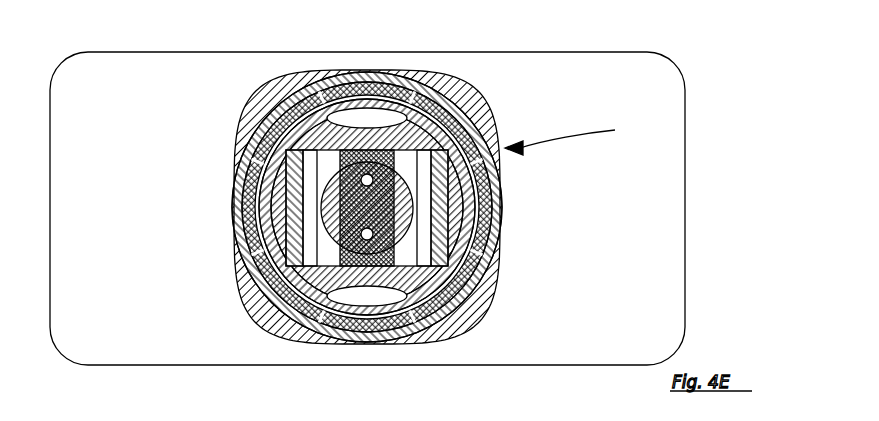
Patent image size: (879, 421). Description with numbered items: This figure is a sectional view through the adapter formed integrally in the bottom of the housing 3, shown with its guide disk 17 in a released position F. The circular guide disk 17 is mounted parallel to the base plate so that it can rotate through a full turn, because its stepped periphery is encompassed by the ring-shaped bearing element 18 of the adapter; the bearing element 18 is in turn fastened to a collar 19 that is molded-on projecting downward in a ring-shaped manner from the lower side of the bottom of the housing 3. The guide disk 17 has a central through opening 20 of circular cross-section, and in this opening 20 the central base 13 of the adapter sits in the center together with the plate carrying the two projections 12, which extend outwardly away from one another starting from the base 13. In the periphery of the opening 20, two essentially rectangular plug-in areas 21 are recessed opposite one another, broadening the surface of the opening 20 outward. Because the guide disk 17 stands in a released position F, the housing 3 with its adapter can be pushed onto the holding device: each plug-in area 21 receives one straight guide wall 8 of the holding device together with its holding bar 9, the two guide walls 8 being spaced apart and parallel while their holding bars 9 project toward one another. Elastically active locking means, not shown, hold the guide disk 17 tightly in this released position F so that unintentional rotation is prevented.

The housing 3 is at (652, 52).
The guide wall 8 is at (295, 198).
The holding bar 9 is at (305, 170).
The projection 12 is at (417, 100).
The base 13 is at (330, 235).
The guide disk 17 is at (458, 212).
The bearing element 18 is at (278, 104).
The collar 19 is at (463, 238).
The through opening 20 is at (405, 255).
The plug-in area 21 is at (370, 150).
The released position F is at (571, 137).